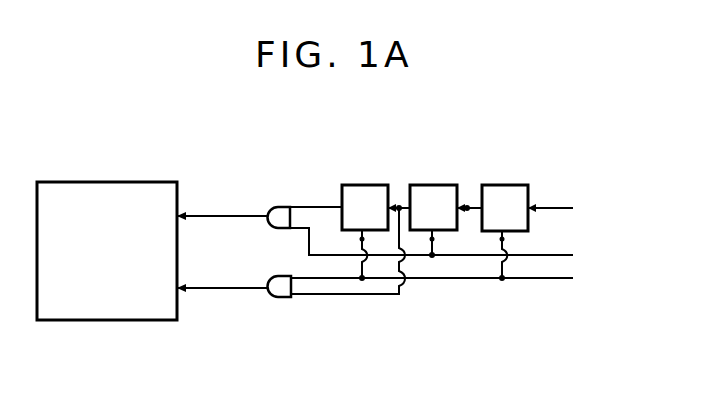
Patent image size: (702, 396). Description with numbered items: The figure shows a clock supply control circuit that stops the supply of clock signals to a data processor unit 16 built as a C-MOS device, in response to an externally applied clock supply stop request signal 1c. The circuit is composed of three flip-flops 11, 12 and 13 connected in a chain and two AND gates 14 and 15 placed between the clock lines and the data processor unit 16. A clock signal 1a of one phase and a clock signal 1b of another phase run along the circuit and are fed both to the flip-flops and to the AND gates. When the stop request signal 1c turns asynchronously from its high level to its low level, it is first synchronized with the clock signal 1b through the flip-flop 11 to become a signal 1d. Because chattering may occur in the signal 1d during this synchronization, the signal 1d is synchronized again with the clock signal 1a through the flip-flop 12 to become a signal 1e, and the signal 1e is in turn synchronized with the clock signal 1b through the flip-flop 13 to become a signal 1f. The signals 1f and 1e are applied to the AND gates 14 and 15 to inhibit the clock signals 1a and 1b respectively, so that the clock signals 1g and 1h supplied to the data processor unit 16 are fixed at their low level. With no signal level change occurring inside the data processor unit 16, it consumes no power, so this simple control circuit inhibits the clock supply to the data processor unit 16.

The flip-flop 11 is at (506, 185).
The flip-flop 12 is at (435, 185).
The flip-flop 13 is at (371, 185).
The AND gate 14 is at (280, 206).
The AND gate 15 is at (283, 298).
The data processor unit 16 is at (157, 182).
The clock signal 1a is at (553, 255).
The clock signal 1b is at (557, 280).
The clock supply stop request signal 1c is at (559, 208).
The signal 1d is at (473, 207).
The signal 1e is at (401, 205).
The signal 1f is at (320, 206).
The clock signal 1g is at (214, 216).
The clock signal 1h is at (213, 290).